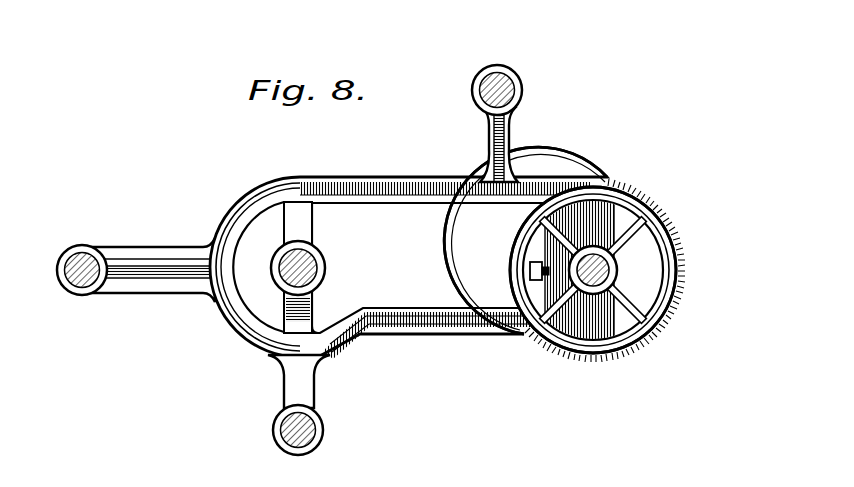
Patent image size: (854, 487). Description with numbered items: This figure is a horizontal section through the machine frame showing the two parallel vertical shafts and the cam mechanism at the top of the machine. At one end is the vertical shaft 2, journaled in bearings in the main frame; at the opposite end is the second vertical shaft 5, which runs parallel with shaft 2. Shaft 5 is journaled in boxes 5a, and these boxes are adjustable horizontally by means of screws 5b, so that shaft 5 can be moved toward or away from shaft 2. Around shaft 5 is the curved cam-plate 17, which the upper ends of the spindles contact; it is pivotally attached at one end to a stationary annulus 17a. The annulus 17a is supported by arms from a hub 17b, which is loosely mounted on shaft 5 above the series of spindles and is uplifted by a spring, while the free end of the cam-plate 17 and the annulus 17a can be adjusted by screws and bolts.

The vertical shaft 2 is at (318, 266).
The second vertical shaft 5 is at (621, 261).
The boxes 5a is at (610, 232).
The screws 5b is at (530, 279).
The curved cam-plate 17 is at (685, 279).
The stationary annulus 17a is at (677, 312).
The hub 17b is at (617, 278).